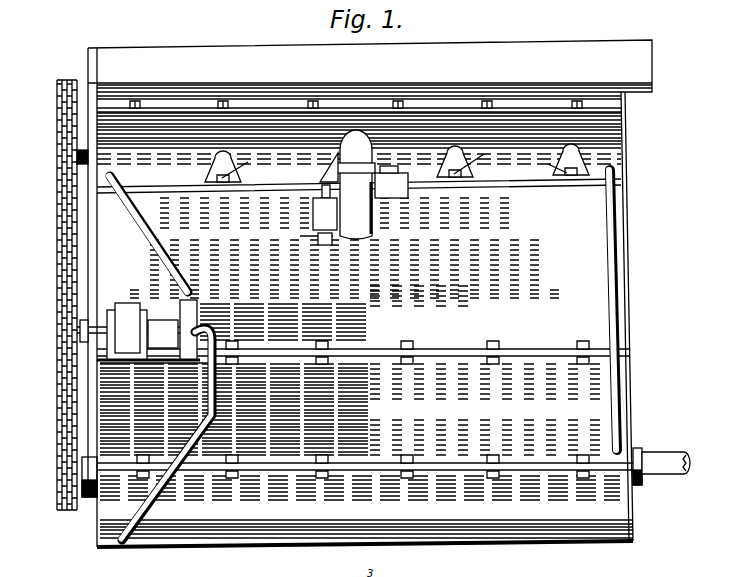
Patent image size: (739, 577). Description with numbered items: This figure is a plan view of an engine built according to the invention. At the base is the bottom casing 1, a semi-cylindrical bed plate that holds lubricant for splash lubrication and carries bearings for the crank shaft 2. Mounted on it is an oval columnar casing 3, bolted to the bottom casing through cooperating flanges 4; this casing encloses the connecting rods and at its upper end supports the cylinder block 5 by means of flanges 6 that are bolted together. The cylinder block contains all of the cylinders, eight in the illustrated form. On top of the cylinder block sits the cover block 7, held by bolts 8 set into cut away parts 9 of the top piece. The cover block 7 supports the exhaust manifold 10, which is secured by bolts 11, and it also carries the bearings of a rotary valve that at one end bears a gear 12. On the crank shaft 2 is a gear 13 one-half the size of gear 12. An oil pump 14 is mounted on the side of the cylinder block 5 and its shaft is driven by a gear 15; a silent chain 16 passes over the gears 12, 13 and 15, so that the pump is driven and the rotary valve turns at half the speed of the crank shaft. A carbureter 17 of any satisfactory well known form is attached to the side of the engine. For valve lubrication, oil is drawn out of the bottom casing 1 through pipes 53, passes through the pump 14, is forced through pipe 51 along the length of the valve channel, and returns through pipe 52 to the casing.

The bottom casing 1 is at (180, 542).
The crank shaft 2 is at (660, 454).
The oval columnar casing 3 is at (628, 408).
The flanges 4 is at (562, 462).
The cylinder block 5 is at (623, 283).
The flanges 6 is at (542, 349).
The cover block 7 is at (96, 128).
The bolts 8 is at (394, 160).
The cut away parts 9 is at (220, 166).
The exhaust manifold 10 is at (279, 52).
The bolts 11 is at (313, 100).
The gear 12 is at (57, 90).
The gear 13 is at (82, 486).
The oil pump 14 is at (128, 306).
The gear 15 is at (77, 328).
The silent chain 16 is at (60, 193).
The carbureter 17 is at (392, 200).
The pipe 51 is at (158, 248).
The pipe 52 is at (612, 228).
The pipes 53 is at (217, 420).